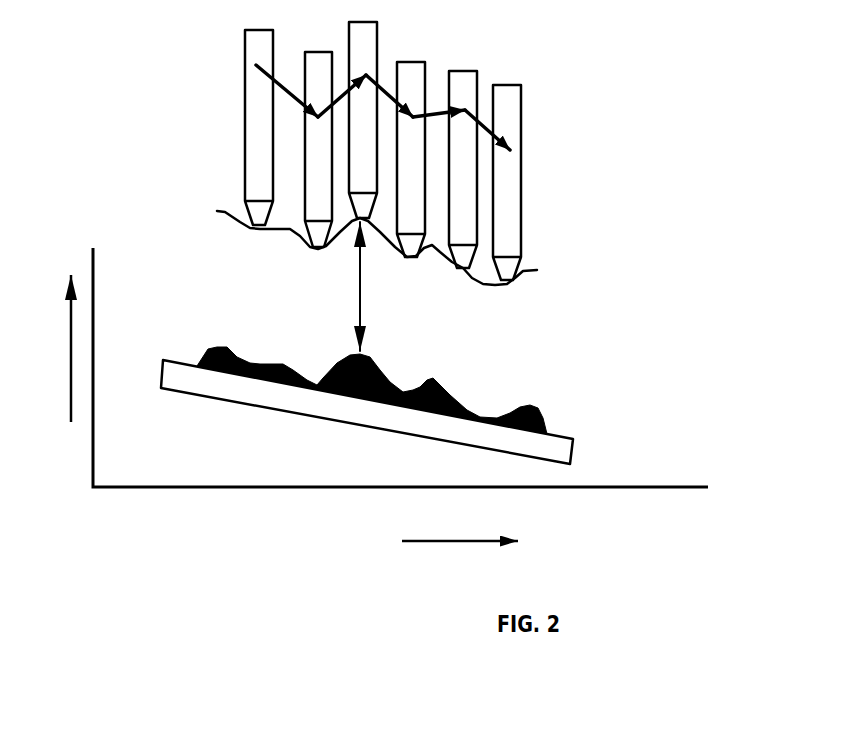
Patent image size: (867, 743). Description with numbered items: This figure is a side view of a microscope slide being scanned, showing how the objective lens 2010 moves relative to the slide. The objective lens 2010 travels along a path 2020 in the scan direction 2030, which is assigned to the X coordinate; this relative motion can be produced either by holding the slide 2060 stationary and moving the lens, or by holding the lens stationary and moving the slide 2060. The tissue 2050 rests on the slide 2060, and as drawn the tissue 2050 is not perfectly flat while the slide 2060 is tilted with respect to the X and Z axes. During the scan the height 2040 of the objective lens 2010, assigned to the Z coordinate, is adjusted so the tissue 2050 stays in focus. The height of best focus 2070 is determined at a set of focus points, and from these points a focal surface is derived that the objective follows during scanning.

The objective lens 2010 is at (256, 157).
The path 2020 is at (251, 67).
The scan direction 2030 is at (390, 563).
The height 2040 is at (37, 362).
The tissue 2050 is at (542, 402).
The slide 2060 is at (575, 452).
The height of best focus 2070 is at (547, 272).